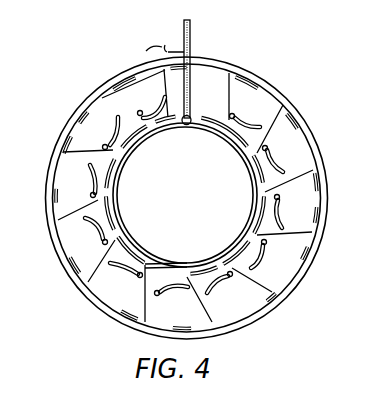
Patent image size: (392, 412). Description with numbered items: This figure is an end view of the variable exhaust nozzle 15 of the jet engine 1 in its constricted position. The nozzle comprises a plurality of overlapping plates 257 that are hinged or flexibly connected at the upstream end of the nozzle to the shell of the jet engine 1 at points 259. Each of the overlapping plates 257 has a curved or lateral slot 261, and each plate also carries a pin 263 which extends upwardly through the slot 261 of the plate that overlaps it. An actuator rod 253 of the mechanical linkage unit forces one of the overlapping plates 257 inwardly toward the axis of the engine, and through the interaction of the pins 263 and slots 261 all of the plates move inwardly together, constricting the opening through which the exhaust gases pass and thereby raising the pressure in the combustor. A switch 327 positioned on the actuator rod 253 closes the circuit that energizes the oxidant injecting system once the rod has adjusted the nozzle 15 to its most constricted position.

The jet engine 1 is at (46, 186).
The variable exhaust nozzle 15 is at (197, 220).
The actuator rod 253 is at (191, 34).
The overlapping plates 257 is at (258, 185).
The hinge points 259 is at (320, 192).
The slot 261 is at (160, 297).
The pin 263 is at (97, 190).
The switch 327 is at (154, 45).